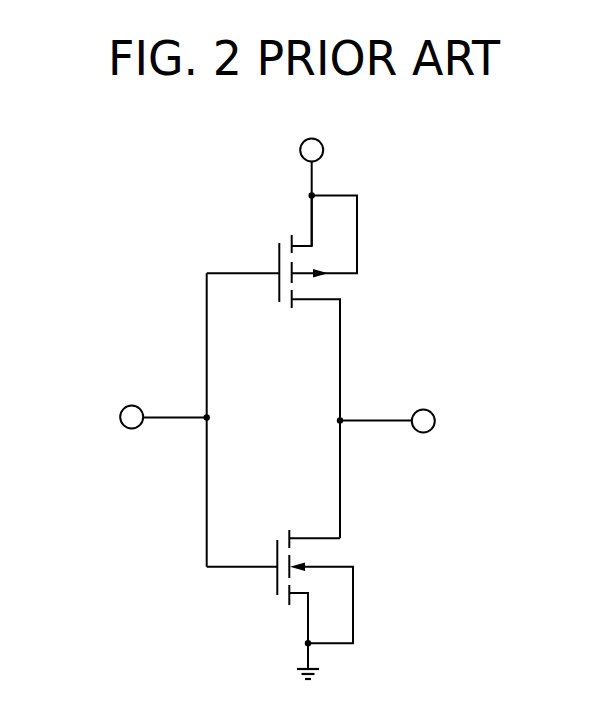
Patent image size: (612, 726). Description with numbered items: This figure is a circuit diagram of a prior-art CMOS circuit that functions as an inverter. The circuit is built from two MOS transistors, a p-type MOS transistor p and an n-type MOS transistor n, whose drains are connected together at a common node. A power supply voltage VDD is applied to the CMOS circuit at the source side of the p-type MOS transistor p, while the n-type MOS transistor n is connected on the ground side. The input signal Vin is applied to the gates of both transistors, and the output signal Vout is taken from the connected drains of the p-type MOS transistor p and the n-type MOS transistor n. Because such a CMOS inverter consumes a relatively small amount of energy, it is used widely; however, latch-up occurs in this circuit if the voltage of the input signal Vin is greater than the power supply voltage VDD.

The power supply voltage VDD is at (307, 175).
The p-type MOS transistor p is at (302, 308).
The n-type MOS transistor n is at (280, 599).
The input signal Vin is at (195, 419).
The output signal Vout is at (389, 457).